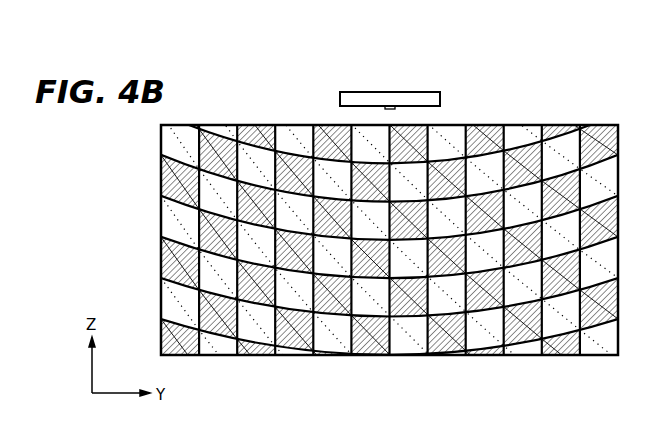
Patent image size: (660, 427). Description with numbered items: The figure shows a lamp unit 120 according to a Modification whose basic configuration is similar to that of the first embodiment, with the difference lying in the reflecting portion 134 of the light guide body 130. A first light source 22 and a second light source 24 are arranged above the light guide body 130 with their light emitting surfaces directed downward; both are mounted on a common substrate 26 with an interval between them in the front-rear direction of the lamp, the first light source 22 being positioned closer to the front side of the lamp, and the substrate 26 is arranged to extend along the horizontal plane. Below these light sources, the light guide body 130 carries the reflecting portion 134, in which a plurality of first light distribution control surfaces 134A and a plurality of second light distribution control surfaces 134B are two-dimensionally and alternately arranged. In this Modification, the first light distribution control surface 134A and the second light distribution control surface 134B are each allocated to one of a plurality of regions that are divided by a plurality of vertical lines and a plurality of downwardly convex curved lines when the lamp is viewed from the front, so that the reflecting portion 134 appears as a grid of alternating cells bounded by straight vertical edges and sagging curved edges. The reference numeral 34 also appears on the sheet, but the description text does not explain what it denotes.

The lamp unit 120 is at (248, 106).
The light guide body 130 is at (396, 228).
The reflecting portion 134 is at (389, 249).
The first light distribution control surface 134A is at (292, 262).
The second light distribution control surface 134B is at (332, 278).
The first light source 22 is at (392, 100).
The second light source 24 is at (426, 64).
The substrate 26 is at (433, 64).
The light guide 34 is at (321, 0).